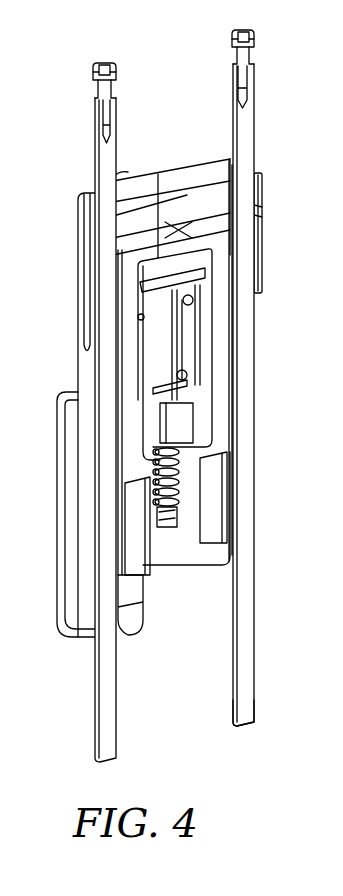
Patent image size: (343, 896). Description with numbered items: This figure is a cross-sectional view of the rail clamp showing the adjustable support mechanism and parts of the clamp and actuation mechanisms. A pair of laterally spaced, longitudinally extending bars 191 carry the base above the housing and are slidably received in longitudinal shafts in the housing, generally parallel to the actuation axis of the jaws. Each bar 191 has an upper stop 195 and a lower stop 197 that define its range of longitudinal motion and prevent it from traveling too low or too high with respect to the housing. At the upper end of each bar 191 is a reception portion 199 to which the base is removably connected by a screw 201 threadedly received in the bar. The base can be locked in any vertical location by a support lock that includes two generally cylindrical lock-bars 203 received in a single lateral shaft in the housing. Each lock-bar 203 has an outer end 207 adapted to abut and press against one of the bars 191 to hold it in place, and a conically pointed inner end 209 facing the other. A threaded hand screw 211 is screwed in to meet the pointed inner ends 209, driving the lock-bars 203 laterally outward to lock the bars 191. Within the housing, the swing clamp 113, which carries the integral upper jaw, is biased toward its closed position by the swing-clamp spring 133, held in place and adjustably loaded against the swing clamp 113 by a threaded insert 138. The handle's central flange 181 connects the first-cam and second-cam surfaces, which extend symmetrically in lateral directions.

The swing clamp 113 is at (176, 413).
The swing-clamp spring 133 is at (179, 452).
The threaded insert 138 is at (178, 512).
The central flange 181 is at (172, 328).
The bar 191 is at (243, 125).
The upper stop 195 is at (250, 163).
The lower stop 197 is at (255, 706).
The reception portion 199 is at (244, 87).
The screw 201 is at (243, 49).
The lock-bar 203 is at (131, 183).
The outer end 207 is at (257, 212).
The inner end 209 is at (228, 230).
The hand screw 211 is at (117, 168).